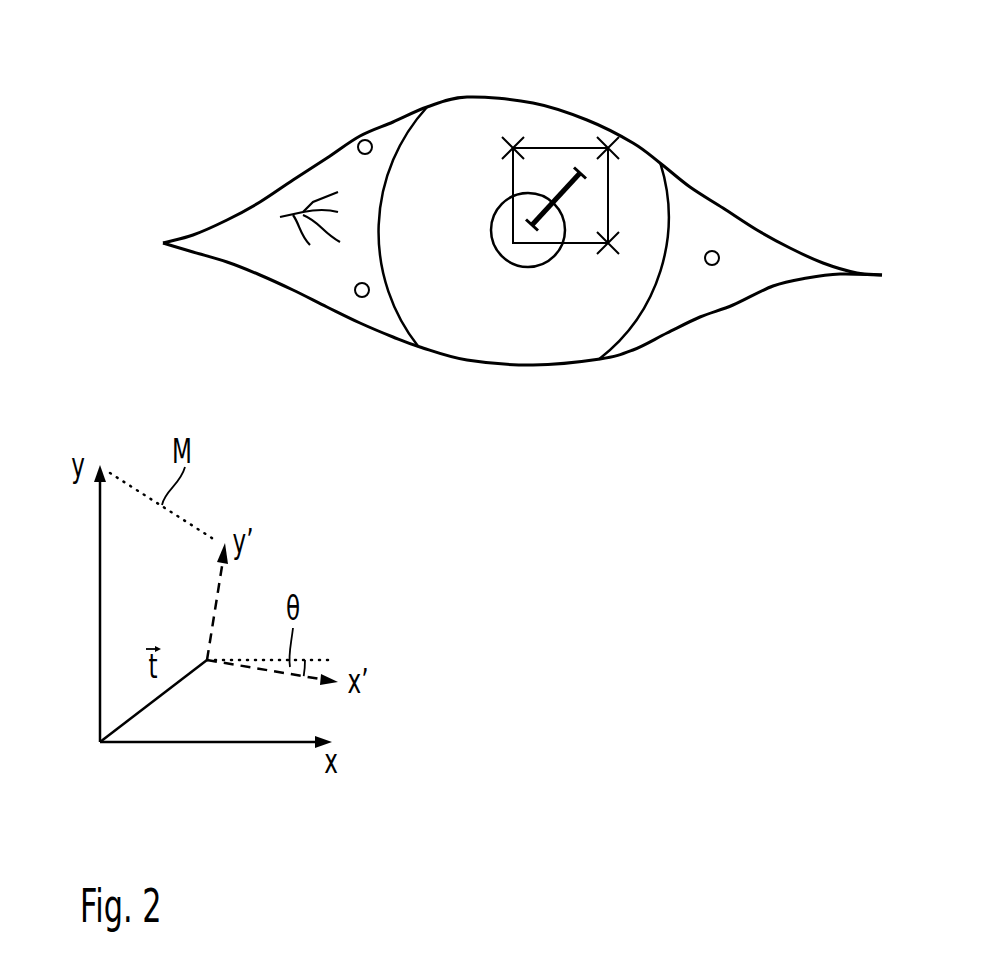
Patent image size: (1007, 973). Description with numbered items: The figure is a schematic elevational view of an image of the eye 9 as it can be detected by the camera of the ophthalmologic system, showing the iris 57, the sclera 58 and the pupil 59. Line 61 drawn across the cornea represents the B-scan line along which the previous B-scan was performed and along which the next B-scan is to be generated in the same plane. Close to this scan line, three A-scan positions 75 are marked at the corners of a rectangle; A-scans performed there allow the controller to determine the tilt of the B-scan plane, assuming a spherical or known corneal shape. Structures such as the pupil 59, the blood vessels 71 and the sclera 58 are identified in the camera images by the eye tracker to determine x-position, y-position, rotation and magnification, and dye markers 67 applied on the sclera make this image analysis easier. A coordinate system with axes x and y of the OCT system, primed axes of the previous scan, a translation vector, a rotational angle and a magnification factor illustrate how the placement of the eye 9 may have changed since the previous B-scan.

The eye 9 is at (733, 84).
The iris 57 is at (424, 315).
The sclera 58 is at (669, 309).
The pupil 59 is at (528, 268).
The B-scan line 61 is at (560, 183).
The dye markers 67 is at (363, 140).
The blood vessels 71 is at (313, 205).
The A-scan positions 75 is at (513, 148).